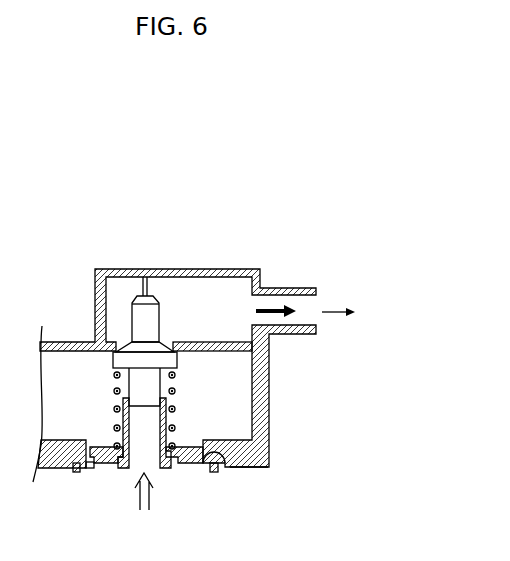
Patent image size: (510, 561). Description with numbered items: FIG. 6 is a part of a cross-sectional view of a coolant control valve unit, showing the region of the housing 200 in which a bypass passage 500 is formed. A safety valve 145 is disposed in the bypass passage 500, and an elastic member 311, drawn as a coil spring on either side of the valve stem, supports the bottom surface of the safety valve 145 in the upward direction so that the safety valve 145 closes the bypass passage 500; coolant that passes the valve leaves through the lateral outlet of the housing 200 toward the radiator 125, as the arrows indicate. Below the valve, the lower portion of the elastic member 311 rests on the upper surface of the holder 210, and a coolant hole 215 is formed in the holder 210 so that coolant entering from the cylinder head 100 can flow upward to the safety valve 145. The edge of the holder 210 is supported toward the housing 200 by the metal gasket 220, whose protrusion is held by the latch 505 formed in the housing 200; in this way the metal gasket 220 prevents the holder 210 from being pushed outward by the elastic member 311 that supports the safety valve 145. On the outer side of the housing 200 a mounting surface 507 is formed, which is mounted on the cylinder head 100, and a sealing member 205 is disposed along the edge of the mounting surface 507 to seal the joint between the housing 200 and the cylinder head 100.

The cylinder head 100 is at (144, 502).
The radiator 125 is at (319, 313).
The safety valve 145 is at (145, 353).
The housing 200 is at (270, 389).
The sealing member 205 is at (77, 473).
The holder 210 is at (117, 466).
The coolant hole 215 is at (157, 456).
The metal gasket 220 is at (192, 465).
The elastic member 311 is at (176, 390).
The bypass passage 500 is at (164, 346).
The latch 505 is at (219, 470).
The mounting surface 507 is at (260, 468).